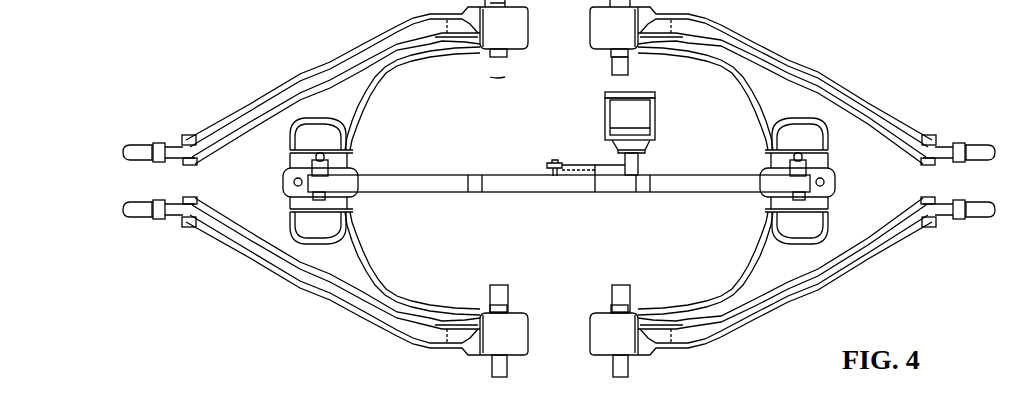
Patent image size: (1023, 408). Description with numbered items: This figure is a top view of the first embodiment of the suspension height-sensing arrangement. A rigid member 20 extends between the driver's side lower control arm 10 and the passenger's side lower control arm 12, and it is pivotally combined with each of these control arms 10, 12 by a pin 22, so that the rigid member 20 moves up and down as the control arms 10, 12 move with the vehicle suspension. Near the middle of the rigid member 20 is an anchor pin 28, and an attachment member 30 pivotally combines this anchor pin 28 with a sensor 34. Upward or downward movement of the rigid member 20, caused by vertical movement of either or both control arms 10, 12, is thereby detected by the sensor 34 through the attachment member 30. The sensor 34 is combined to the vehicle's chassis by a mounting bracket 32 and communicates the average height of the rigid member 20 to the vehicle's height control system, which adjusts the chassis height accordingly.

The lower control arm 10 is at (815, 85).
The lower control arm 12 is at (318, 80).
The rigid member 20 is at (502, 187).
The pin 22 is at (320, 158).
The anchor pin 28 is at (555, 160).
The attachment member 30 is at (595, 180).
The mounting bracket 32 is at (652, 94).
The sensor 34 is at (642, 117).